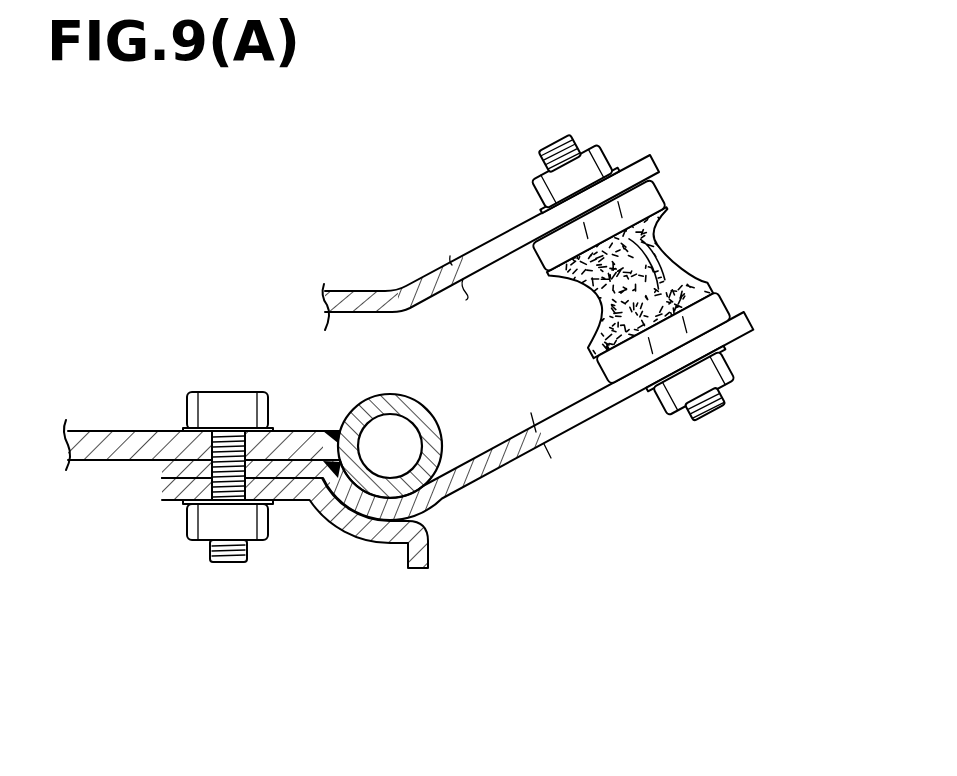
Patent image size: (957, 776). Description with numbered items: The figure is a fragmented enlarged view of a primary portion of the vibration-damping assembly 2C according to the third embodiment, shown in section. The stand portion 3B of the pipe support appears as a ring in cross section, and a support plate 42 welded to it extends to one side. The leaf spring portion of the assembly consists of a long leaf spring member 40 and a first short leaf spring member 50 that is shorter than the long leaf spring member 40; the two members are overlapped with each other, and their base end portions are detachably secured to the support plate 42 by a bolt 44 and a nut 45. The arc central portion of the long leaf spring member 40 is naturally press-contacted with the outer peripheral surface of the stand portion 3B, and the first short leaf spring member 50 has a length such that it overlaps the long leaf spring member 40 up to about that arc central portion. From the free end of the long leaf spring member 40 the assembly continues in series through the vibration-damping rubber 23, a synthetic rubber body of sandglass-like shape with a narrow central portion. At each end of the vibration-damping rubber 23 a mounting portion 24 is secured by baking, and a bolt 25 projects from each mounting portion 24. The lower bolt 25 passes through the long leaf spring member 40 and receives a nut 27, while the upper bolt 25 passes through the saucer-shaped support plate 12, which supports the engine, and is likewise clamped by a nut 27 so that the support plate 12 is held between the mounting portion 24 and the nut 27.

The support plate 12 is at (438, 272).
The vibration-damping rubber 23 is at (664, 250).
The mounting portion 24 is at (655, 197).
The bolt 25 is at (561, 138).
The nut 27 is at (608, 147).
The long leaf spring member 40 is at (512, 457).
The support plate 42 is at (120, 430).
The bolt 44 is at (230, 562).
The nut 45 is at (195, 525).
The first short leaf spring member 50 is at (357, 540).
The stand portion 3B is at (415, 412).
The vibration-damping assembly 2C is at (644, 472).